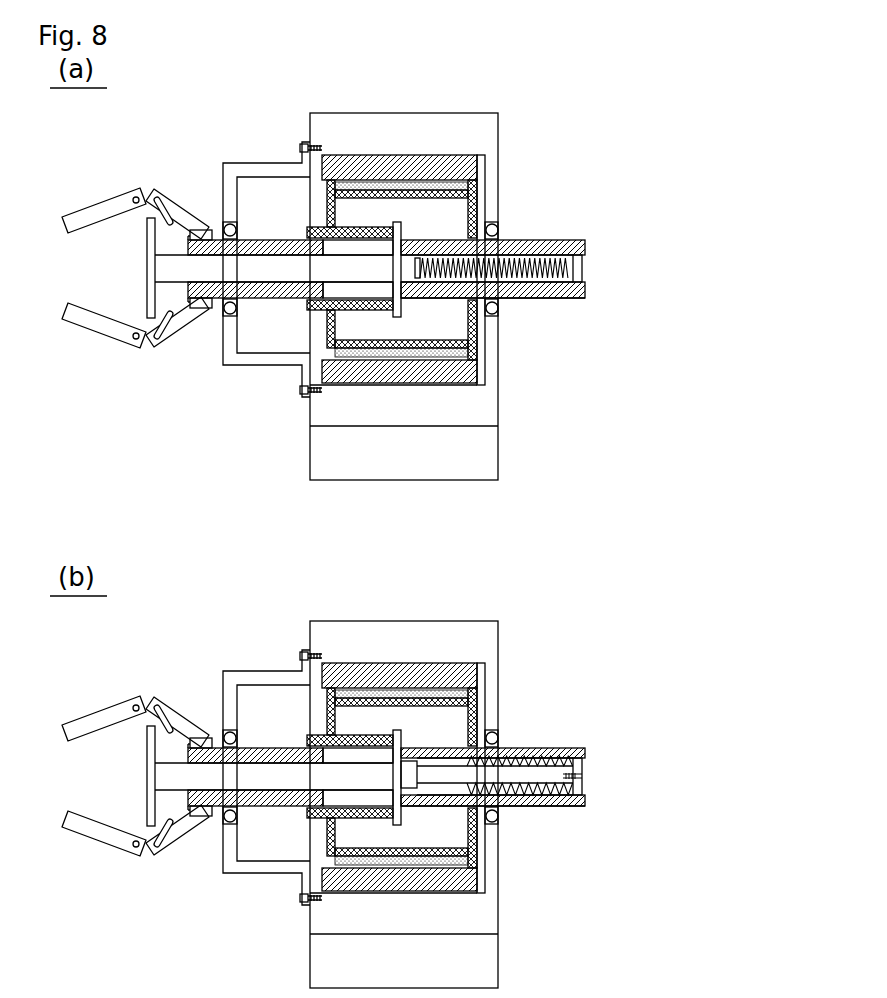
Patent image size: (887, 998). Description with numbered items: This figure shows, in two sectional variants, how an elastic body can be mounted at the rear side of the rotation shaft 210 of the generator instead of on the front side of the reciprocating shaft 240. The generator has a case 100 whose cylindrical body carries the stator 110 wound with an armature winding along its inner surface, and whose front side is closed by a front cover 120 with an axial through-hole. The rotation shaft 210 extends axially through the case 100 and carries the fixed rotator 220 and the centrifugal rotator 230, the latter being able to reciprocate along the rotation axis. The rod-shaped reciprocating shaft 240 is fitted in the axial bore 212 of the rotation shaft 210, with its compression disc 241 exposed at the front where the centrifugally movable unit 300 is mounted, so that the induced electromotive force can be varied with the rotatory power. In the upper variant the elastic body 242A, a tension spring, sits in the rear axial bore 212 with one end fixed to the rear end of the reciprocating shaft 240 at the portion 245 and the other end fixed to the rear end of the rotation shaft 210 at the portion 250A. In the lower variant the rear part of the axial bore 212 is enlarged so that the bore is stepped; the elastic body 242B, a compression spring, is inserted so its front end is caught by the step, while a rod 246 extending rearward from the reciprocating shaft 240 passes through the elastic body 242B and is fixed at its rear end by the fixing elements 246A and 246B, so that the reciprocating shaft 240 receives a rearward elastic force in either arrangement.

The case 100 is at (500, 407).
The stator 110 is at (478, 371).
The front cover 120 is at (230, 367).
The rotation shaft 210 is at (582, 298).
The axial bore 212 is at (528, 284).
The fixed rotator 220 is at (478, 213).
The centrifugal rotator 230 is at (330, 206).
The reciprocating shaft 240 is at (258, 267).
The compression disc 241 is at (150, 245).
The elastic body 242A is at (585, 241).
The fixing portion of elastic body to reciprocating shaft 245 is at (420, 258).
The fixing portion of elastic body to rotation shaft 250A is at (582, 275).
The centrifugally movable unit 300 is at (116, 353).
The rod 246 is at (440, 770).
The elastic body 242B is at (582, 748).
The rod fixing element 246A is at (587, 775).
The rod fixing element 246B is at (580, 787).